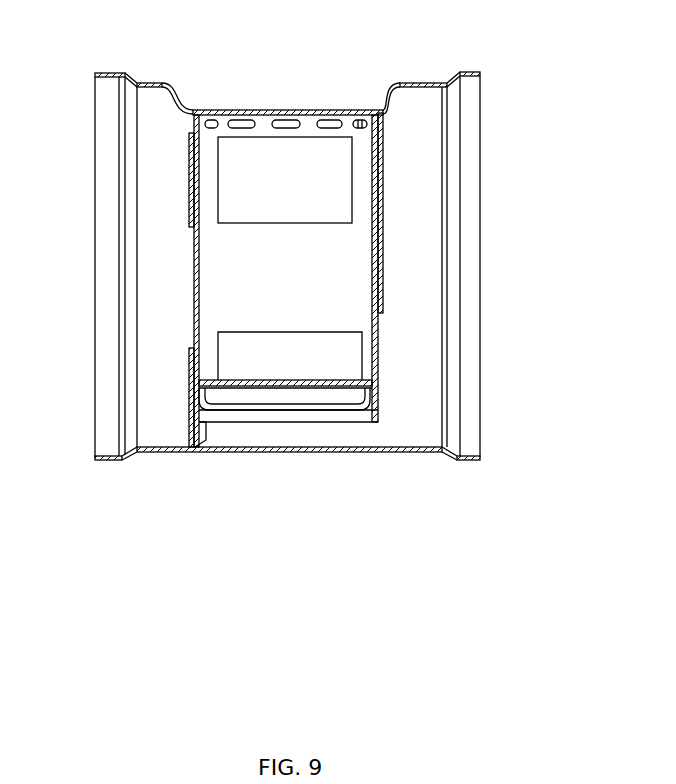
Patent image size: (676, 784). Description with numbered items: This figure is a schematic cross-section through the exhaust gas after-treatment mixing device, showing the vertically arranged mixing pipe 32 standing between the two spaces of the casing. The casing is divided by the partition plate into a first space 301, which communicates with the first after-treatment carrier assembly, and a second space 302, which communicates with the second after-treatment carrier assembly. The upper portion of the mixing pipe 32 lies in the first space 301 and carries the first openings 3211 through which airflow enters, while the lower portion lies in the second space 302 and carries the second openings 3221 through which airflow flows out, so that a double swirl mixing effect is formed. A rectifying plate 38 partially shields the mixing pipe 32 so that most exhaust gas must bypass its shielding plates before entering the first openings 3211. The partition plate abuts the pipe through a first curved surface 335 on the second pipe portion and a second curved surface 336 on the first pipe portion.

The mixing pipe 32 is at (318, 122).
The first openings 3211 is at (248, 152).
The second openings 3221 is at (318, 344).
The rectifying plate 38 is at (193, 190).
The second curved surface 336 is at (380, 180).
The first curved surface 335 is at (195, 383).
The first space 301 is at (160, 430).
The second space 302 is at (417, 417).